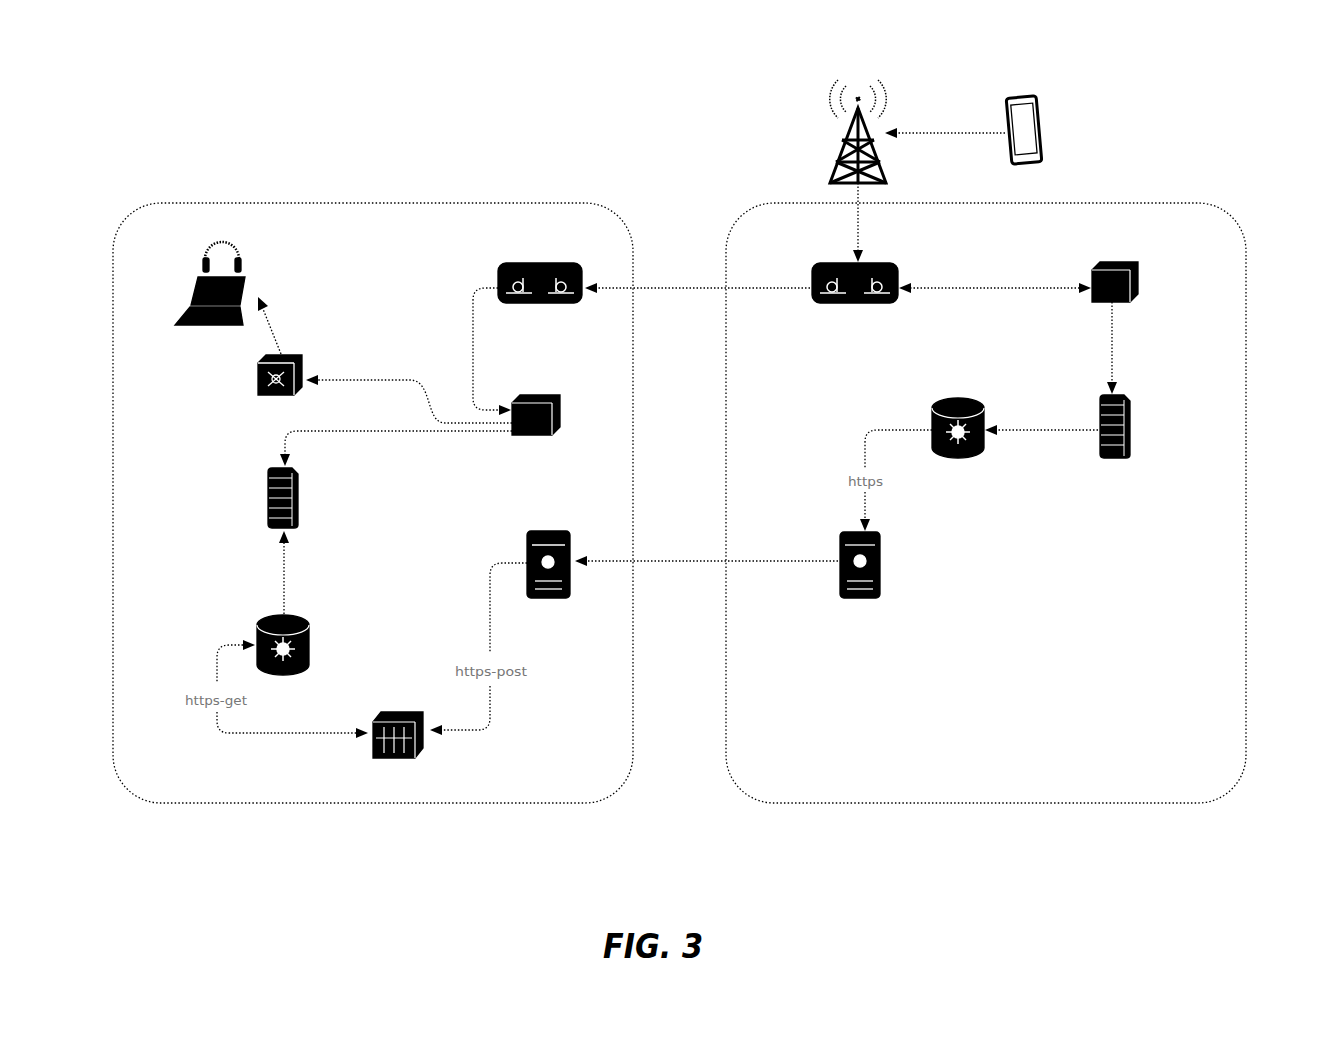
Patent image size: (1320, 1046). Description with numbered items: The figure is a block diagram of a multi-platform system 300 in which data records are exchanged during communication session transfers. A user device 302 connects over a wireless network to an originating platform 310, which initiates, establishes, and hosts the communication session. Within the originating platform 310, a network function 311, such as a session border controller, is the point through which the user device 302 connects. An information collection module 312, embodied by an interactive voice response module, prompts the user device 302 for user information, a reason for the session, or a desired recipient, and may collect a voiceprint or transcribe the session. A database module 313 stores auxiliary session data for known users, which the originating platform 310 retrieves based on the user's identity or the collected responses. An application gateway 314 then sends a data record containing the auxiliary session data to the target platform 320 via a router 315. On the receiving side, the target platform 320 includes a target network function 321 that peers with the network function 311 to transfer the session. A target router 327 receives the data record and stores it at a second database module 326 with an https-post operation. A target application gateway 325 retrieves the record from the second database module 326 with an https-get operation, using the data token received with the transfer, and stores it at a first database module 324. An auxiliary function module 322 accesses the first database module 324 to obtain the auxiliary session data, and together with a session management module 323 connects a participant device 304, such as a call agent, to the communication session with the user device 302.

The multi-platform system 300 is at (1240, 96).
The user device 302 is at (1041, 115).
The participant device 304 is at (205, 325).
The originating platform 310 is at (1070, 231).
The network function 311 is at (862, 303).
The information collection module 312 is at (1125, 261).
The database module 313 is at (1123, 456).
The application gateway 314 is at (965, 456).
The router 315 is at (868, 598).
The target platform 320 is at (440, 231).
The target network function 321 is at (536, 263).
The auxiliary function module 322 is at (543, 395).
The session management module 323 is at (292, 354).
The first database module 324 is at (298, 488).
The target application gateway 325 is at (309, 622).
The second database module 326 is at (410, 758).
The target router 327 is at (548, 599).